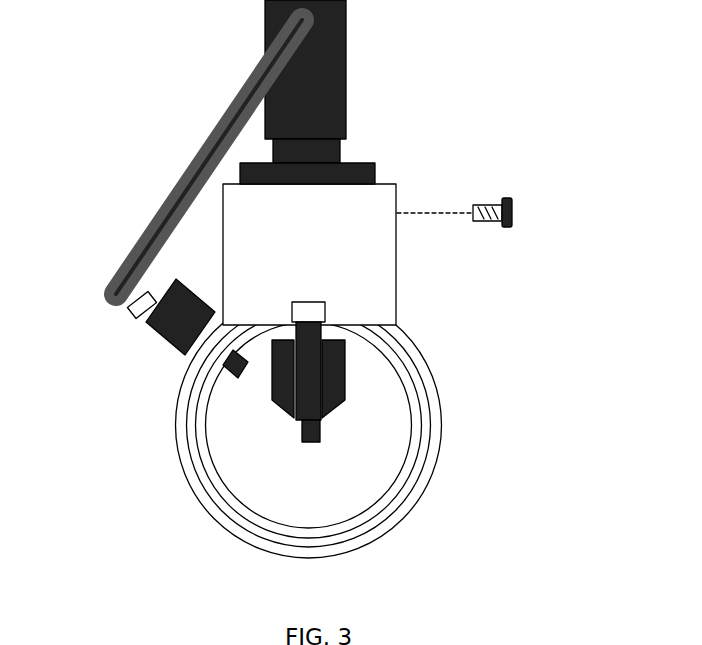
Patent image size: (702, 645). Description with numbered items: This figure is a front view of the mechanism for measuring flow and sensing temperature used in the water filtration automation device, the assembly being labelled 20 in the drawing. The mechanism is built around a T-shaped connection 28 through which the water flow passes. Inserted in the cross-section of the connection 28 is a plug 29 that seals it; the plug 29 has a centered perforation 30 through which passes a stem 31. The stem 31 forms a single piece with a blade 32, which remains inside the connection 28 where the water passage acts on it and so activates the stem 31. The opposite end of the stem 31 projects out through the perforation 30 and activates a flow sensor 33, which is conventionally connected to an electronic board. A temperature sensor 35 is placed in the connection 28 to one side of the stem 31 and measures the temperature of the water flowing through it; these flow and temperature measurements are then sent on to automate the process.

The spray gun assembly 20 is at (570, 639).
The T-shaped connection 28 is at (202, 503).
The plug 29 is at (380, 160).
The centered perforation 30 is at (290, 302).
The stem 31 is at (292, 423).
The blade 32 is at (347, 362).
The flow sensor 33 is at (225, 372).
The temperature sensor 35 is at (165, 342).